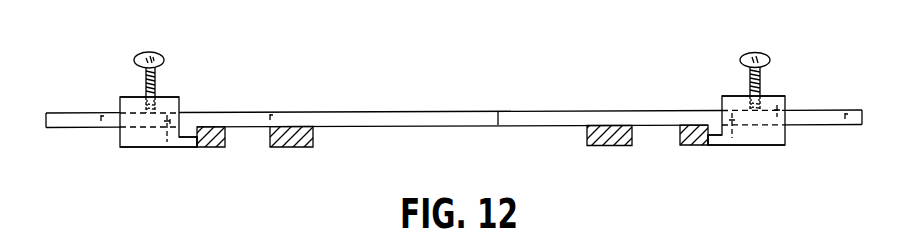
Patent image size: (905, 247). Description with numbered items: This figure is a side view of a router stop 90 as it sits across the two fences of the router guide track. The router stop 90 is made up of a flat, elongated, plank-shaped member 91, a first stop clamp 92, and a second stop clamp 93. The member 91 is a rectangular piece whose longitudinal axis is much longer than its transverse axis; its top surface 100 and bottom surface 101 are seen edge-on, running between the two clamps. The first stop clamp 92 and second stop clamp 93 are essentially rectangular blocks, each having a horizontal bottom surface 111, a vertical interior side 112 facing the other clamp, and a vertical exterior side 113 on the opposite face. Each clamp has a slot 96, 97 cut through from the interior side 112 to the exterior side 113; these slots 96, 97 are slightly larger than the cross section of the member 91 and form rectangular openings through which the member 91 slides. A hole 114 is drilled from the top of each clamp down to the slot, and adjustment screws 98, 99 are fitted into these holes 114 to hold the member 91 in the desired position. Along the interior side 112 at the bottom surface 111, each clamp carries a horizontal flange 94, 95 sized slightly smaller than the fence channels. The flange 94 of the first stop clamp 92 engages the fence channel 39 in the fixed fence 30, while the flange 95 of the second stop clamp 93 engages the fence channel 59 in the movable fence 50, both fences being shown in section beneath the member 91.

The fixed fence 30 is at (312, 146).
The fence channel 39 is at (200, 144).
The movable fence 50 is at (700, 146).
The fence channel 59 is at (703, 127).
The router stop 90 is at (463, 101).
The plank-shaped member 91 is at (520, 112).
The first stop clamp 92 is at (133, 111).
The second stop clamp 93 is at (794, 105).
The horizontal flange 94 is at (188, 146).
The horizontal flange 95 is at (717, 138).
The slot 96 is at (142, 128).
The slot 97 is at (767, 125).
The adjustment screw 98 is at (161, 57).
The adjustment screw 99 is at (750, 53).
The top surface 100 is at (370, 112).
The bottom surface 101 is at (428, 126).
The horizontal bottom surface 111 is at (153, 148).
The vertical interior side 112 is at (173, 101).
The vertical exterior side 113 is at (120, 106).
The hole 114 is at (152, 115).